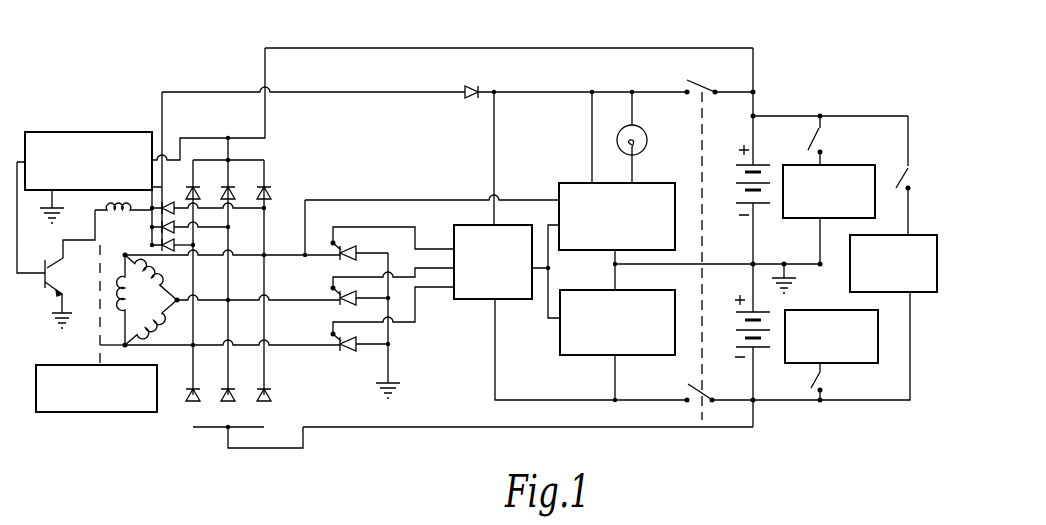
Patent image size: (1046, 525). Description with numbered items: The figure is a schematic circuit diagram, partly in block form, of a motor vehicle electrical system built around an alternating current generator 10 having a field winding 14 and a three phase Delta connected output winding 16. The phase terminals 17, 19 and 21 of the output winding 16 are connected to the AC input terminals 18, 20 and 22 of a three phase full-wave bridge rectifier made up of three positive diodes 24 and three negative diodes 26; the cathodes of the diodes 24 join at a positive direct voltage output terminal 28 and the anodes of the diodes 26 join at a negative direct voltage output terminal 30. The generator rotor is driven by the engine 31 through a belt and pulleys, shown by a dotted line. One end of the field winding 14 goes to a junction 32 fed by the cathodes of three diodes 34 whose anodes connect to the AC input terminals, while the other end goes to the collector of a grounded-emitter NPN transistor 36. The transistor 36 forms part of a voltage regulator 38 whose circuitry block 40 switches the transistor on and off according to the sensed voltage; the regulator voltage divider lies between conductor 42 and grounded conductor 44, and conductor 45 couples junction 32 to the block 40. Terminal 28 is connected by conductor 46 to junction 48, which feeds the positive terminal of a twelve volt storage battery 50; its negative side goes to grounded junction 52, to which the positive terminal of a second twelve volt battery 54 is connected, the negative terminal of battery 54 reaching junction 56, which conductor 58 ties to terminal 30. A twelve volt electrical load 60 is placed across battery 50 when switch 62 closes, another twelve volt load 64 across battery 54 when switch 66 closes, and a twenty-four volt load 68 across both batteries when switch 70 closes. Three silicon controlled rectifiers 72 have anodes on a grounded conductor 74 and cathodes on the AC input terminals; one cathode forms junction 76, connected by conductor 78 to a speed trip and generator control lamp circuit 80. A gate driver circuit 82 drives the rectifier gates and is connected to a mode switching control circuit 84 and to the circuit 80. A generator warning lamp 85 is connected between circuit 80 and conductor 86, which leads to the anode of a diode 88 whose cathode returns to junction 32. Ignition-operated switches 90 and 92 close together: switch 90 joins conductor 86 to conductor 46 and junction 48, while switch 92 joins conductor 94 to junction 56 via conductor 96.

The alternating current generator 10 is at (118, 254).
The field winding 14 is at (118, 213).
The three phase Delta connected output winding 16 is at (167, 308).
The phase terminal 17 is at (120, 262).
The AC input terminal 18 is at (266, 252).
The phase terminal 19 is at (180, 296).
The AC input terminal 20 is at (236, 300).
The phase terminal 21 is at (113, 345).
The AC input terminal 22 is at (195, 346).
The positive diodes 24 is at (232, 186).
The negative diodes 26 is at (223, 396).
The positive direct voltage output terminal 28 is at (228, 158).
The negative direct voltage output terminal 30 is at (226, 430).
The engine 31 is at (133, 413).
The junction 32 is at (152, 216).
The diodes 34 is at (178, 232).
The NPN transistor 36 is at (43, 283).
The voltage regulator 38 is at (65, 230).
The voltage regulator circuitry 40 is at (63, 133).
The conductor 42 is at (203, 137).
The grounded conductor 44 is at (53, 200).
The conductor 45 is at (157, 194).
The conductor 46 is at (322, 47).
The junction 48 is at (758, 114).
The 12 volt storage battery 50 is at (737, 183).
The junction 52 is at (783, 262).
The 12 volt storage battery 54 is at (766, 346).
The junction 56 is at (758, 404).
The conductor 58 is at (410, 428).
The 12 volt motor vehicle electrical load 60 is at (855, 138).
The switch 62 is at (823, 140).
The 12 volt motor vehicle electrical load 64 is at (880, 346).
The switch 66 is at (826, 382).
The 24 volt electrical load 68 is at (923, 294).
The switch 70 is at (922, 170).
The silicon controlled rectifiers 72 is at (342, 262).
The conductor 74 is at (392, 332).
The junction 76 is at (307, 252).
The conductor 78 is at (396, 200).
The speed trip and generator control lamp circuit 80 is at (648, 182).
The controlled rectifier gate driver circuit 82 is at (467, 302).
The mode switching control circuit 84 is at (595, 357).
The generator charge indicator or warning lamp 85 is at (631, 134).
The conductor 86 is at (523, 48).
The diode 88 is at (467, 87).
The switch 90 is at (695, 80).
The switch 92 is at (697, 405).
The conductor 94 is at (697, 392).
The conductor 96 is at (738, 403).